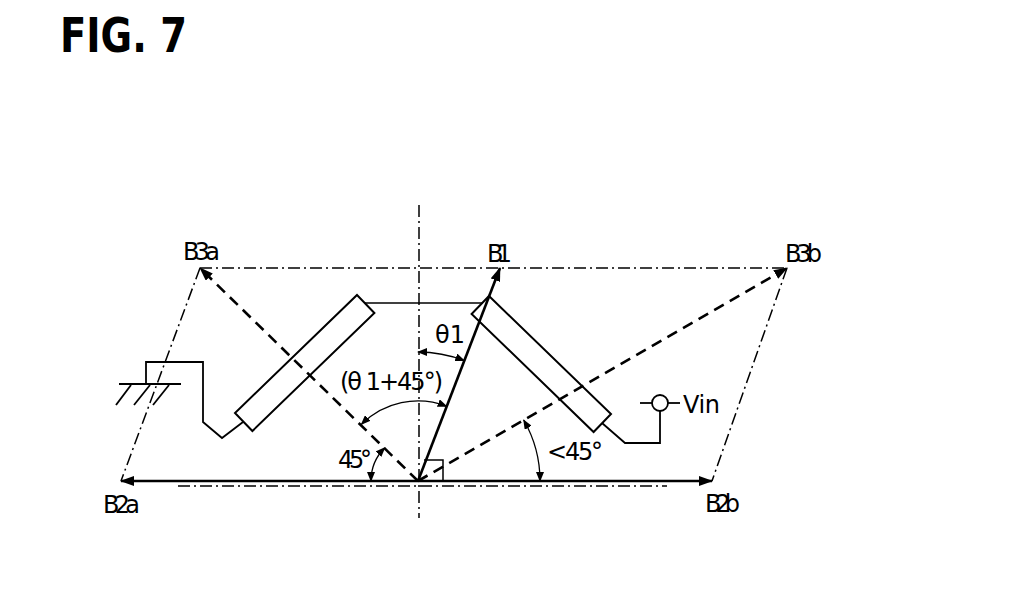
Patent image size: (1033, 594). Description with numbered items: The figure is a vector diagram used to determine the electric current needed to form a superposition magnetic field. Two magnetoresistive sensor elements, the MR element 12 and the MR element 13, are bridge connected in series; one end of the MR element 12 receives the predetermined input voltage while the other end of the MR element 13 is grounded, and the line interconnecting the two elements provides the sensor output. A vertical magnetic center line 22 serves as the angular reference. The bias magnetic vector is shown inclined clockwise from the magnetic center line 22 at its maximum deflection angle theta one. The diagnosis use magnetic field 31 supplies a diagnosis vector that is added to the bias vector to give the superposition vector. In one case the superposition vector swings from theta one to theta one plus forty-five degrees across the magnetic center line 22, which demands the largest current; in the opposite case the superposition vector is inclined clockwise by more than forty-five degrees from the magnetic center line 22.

The MR element 12 is at (557, 358).
The MR element 13 is at (263, 383).
The magnetic center line 22 is at (421, 238).
The diagnosis use magnetic field 31 is at (660, 487).